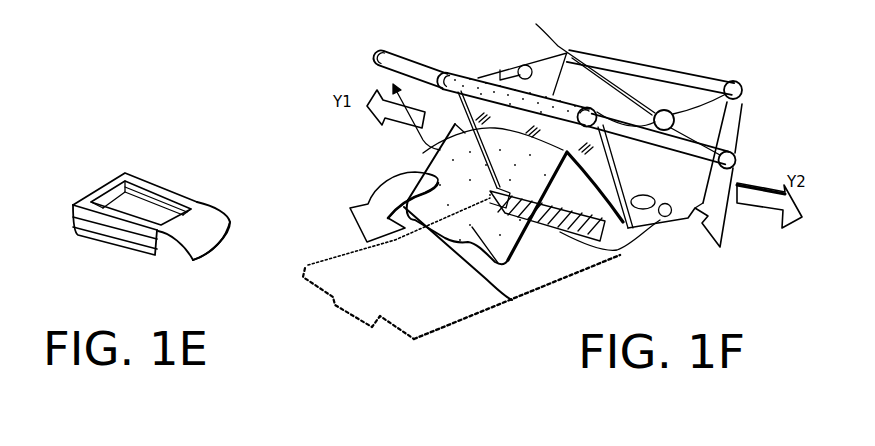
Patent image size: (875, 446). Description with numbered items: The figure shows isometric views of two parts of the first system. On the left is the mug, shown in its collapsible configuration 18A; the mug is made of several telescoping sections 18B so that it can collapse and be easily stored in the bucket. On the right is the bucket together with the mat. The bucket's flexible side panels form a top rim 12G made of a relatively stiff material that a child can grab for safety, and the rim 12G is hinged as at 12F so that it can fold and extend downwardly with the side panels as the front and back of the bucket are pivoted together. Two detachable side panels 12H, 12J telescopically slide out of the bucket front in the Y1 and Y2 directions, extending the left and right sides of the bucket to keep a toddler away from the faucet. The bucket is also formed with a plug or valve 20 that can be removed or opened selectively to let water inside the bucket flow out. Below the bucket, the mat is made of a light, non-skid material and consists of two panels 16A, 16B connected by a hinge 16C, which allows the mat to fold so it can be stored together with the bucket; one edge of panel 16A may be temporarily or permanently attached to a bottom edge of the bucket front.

In FIG. 1E, the collapsible mug configuration 18A is at (183, 188).
In FIG. 1E, the telescoping sections 18B is at (110, 192).
In FIG. 1F, the detachable side panel 12H is at (393, 78).
In FIG. 1F, the top rim 12G is at (543, 55).
In FIG. 1F, the hinge 12F is at (669, 111).
In FIG. 1F, the detachable side panel 12J is at (715, 198).
In FIG. 1F, the plug or valve 20 is at (672, 214).
In FIG. 1F, the mat panel 16A is at (615, 235).
In FIG. 1F, the mat panel 16B is at (512, 300).
In FIG. 1F, the hinge 16C is at (455, 124).